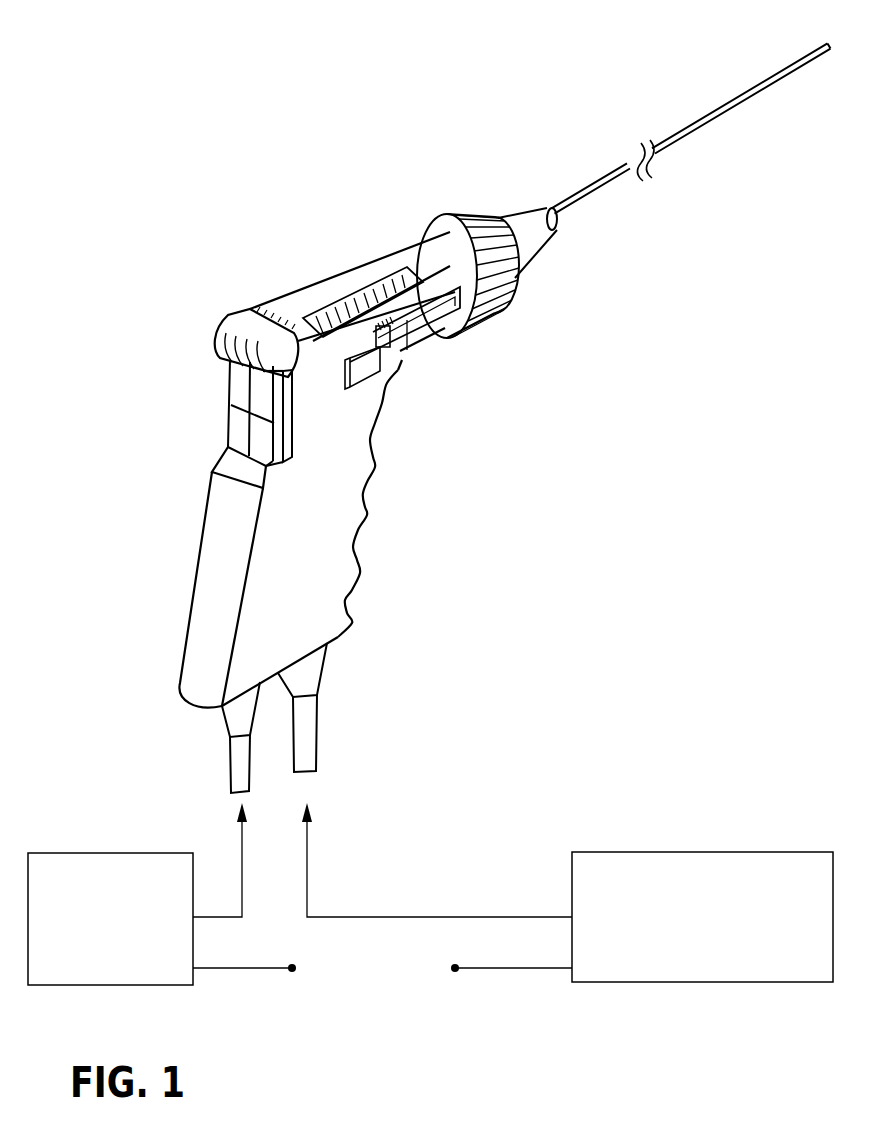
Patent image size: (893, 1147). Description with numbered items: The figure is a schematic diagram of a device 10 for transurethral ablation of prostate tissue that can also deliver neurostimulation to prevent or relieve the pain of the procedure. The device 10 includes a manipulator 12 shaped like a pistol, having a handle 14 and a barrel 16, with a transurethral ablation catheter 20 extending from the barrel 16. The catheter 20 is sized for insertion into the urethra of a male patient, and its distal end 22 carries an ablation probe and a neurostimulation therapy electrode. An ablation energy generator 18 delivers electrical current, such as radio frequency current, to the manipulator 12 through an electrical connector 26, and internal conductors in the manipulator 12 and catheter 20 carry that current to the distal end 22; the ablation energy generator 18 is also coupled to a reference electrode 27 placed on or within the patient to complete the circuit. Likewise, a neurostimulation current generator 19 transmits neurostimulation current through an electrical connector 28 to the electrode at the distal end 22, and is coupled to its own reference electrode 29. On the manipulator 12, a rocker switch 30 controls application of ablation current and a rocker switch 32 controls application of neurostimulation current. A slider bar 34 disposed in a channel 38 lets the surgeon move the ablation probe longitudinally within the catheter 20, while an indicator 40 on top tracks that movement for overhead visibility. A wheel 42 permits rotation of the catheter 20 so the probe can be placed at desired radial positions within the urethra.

The device 10 is at (808, 389).
The manipulator 12 is at (176, 351).
The handle 14 is at (367, 515).
The barrel 16 is at (385, 266).
The ablation energy generator 18 is at (110, 853).
The neurostimulation current generator 19 is at (702, 852).
The transurethral ablation catheter 20 is at (607, 182).
The distal end 22 is at (822, 47).
The electrical connector 26 is at (225, 753).
The reference electrode 27 is at (267, 969).
The electrical connector 28 is at (320, 687).
The reference electrode 29 is at (455, 972).
The rocker switch 30 is at (232, 400).
The rocker switch 32 is at (290, 407).
The slider bar 34 is at (392, 363).
The channel 38 is at (427, 322).
The indicator 40 is at (347, 298).
The wheel 42 is at (518, 313).